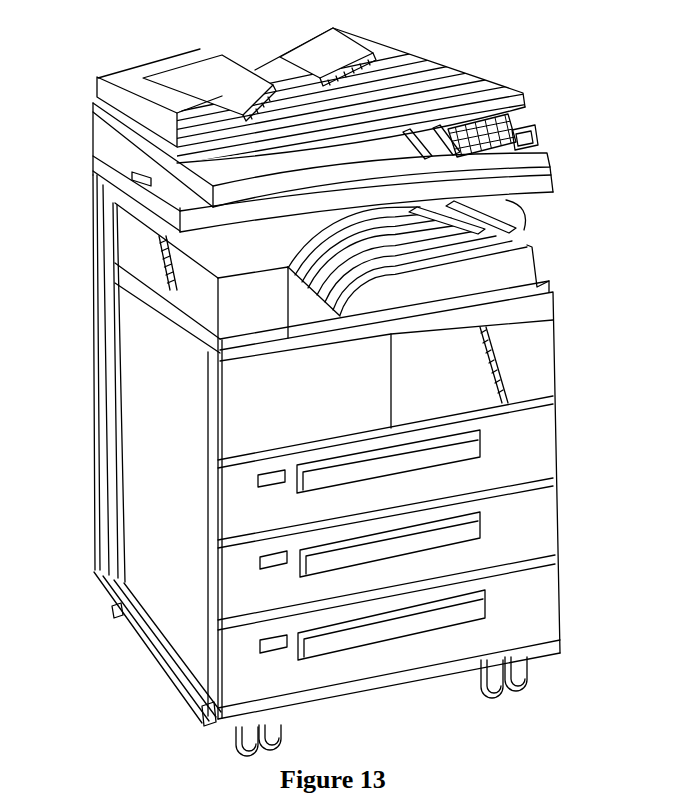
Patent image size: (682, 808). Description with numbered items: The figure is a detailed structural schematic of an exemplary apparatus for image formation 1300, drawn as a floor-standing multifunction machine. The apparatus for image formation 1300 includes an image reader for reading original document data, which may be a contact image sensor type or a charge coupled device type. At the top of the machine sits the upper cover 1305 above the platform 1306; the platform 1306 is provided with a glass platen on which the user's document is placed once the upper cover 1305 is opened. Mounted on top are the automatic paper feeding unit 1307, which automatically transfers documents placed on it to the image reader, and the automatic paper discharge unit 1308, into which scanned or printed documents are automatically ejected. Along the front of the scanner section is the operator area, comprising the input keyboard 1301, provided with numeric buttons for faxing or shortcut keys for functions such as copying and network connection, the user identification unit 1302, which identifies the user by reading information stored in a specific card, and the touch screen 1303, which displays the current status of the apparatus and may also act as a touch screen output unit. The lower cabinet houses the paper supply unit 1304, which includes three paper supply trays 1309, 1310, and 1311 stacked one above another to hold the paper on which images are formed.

The apparatus for image formation 1300 is at (326, 382).
The input keyboard 1301 is at (512, 128).
The user identification unit 1302 is at (561, 136).
The touch screen 1303 is at (381, 166).
The paper supply unit 1304 is at (144, 649).
The upper cover 1305 is at (125, 98).
The platform 1306 is at (117, 167).
The automatic paper feeding unit 1307 is at (209, 70).
The automatic paper discharge unit 1308 is at (355, 90).
The paper supply tray 1309 is at (425, 444).
The paper supply tray 1310 is at (424, 527).
The paper supply tray 1311 is at (425, 607).